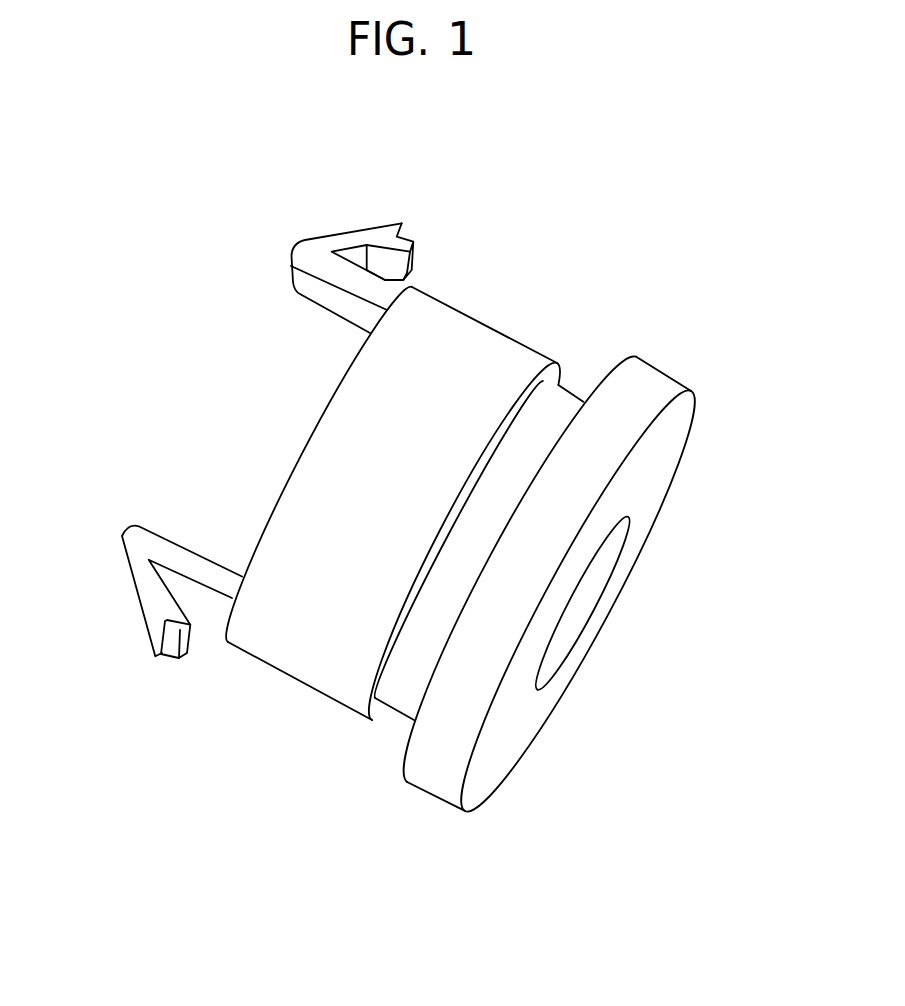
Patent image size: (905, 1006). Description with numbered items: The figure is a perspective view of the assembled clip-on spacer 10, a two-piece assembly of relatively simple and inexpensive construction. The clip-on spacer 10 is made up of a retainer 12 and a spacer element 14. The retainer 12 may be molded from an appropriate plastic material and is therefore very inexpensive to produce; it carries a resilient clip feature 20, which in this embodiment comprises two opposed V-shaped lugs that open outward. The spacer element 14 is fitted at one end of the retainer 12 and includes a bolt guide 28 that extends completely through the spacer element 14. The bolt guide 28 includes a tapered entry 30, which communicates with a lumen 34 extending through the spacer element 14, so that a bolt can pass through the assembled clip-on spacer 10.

The clip-on spacer 10 is at (612, 260).
The retainer 12 is at (280, 660).
The spacer element 14 is at (404, 698).
The resilient clip feature 20 is at (297, 278).
The bolt guide 28 is at (617, 650).
The tapered entry 30 is at (586, 602).
The lumen 34 is at (651, 378).